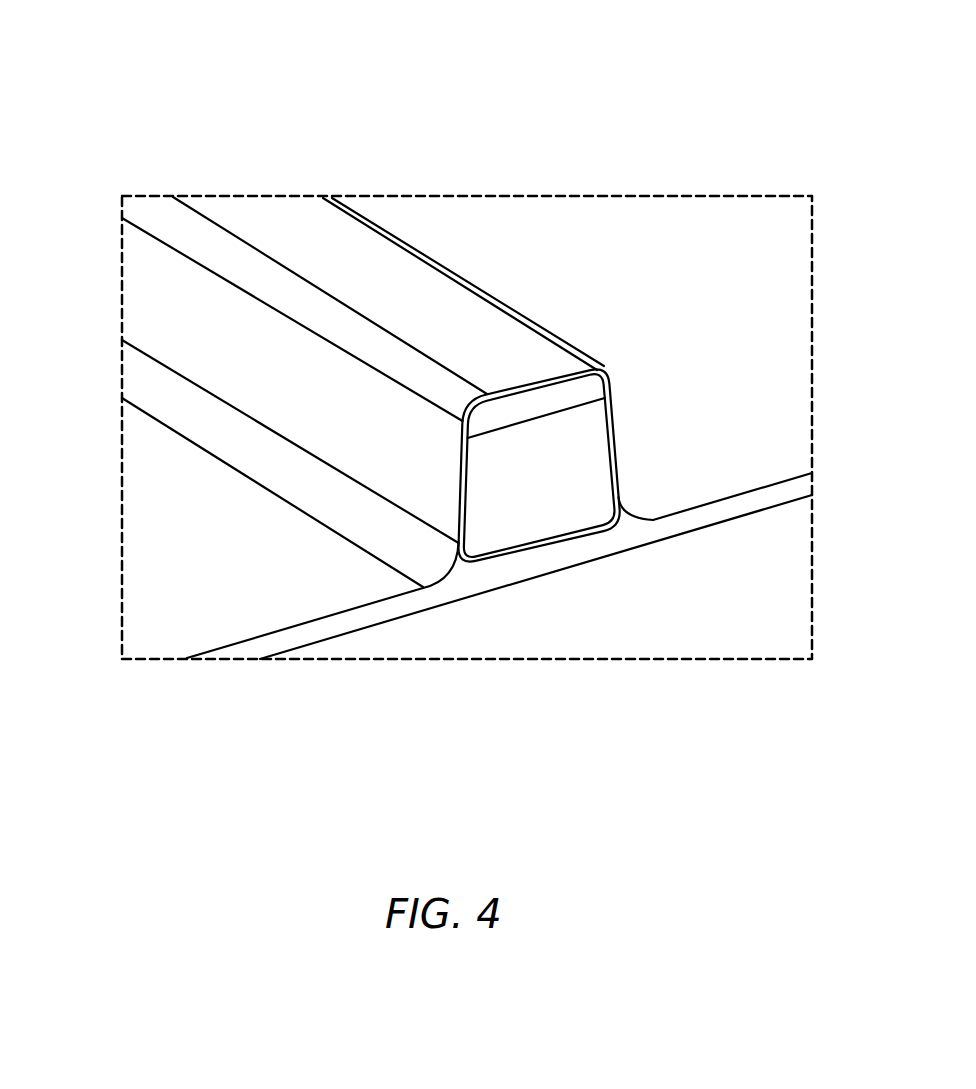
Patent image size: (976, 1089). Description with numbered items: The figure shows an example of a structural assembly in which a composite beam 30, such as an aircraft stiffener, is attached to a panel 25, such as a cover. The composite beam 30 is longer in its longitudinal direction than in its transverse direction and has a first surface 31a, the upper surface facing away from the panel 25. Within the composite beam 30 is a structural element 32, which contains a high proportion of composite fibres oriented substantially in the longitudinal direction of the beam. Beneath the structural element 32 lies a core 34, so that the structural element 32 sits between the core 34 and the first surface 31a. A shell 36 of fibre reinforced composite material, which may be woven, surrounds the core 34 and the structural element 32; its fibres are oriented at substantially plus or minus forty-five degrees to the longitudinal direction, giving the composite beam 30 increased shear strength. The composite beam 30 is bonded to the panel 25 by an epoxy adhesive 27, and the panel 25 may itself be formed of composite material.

The panel 25 is at (315, 632).
The epoxy adhesive 27 is at (448, 570).
The composite beam 30 is at (262, 377).
The first surface 31a is at (327, 240).
The structural element 32 is at (567, 392).
The core 34 is at (580, 497).
The shell 36 is at (435, 303).